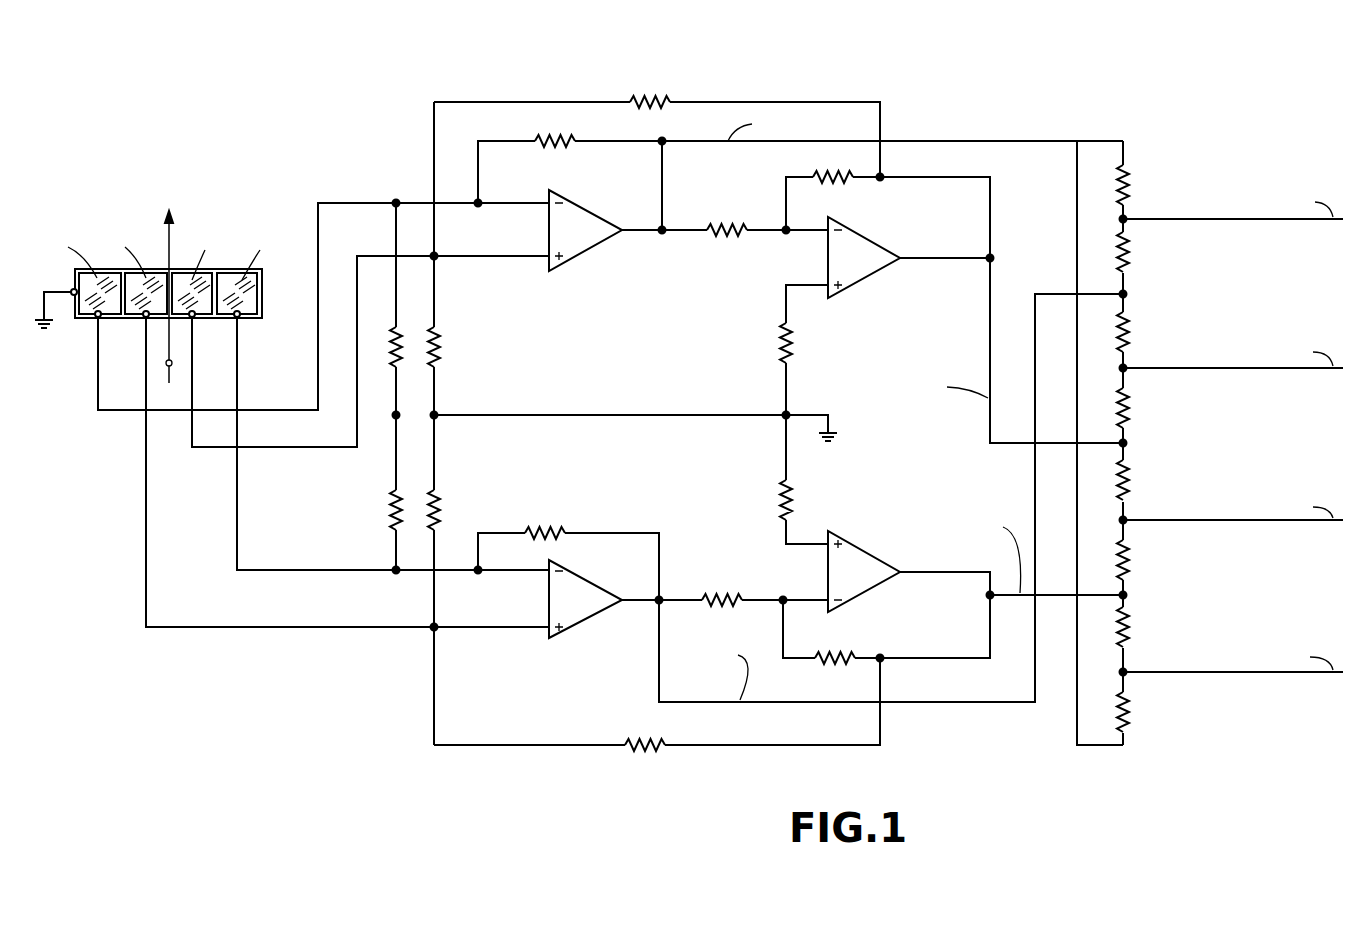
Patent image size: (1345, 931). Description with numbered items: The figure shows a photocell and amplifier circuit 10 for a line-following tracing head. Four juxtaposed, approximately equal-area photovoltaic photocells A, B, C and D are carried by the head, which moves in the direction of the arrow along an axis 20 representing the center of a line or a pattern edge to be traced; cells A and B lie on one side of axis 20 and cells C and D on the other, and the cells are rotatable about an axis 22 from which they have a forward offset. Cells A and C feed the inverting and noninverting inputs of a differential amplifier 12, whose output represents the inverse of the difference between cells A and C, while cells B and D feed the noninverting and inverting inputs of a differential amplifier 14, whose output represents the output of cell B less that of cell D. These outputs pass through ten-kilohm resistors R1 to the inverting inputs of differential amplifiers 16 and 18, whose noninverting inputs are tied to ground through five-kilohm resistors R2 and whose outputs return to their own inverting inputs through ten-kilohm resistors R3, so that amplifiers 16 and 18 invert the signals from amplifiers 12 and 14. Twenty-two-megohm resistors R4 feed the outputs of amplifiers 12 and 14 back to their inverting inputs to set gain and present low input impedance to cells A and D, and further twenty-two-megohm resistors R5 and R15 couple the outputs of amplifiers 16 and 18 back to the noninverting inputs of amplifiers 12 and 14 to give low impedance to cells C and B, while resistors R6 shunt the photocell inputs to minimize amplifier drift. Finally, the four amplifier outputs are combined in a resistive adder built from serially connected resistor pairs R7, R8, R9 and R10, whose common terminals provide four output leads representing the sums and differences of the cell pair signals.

The circuit 10 is at (998, 72).
The differential amplifier 12 is at (561, 241).
The differential amplifier 14 is at (560, 611).
The differential amplifier 16 is at (838, 269).
The differential amplifier 18 is at (838, 583).
The axis 20 is at (167, 235).
The axis 22 is at (167, 309).
The resistor R1 is at (717, 220).
The resistor R2 is at (783, 332).
The resistor R3 is at (833, 172).
The resistor R4 is at (550, 138).
The resistor R5 is at (645, 752).
The resistor R6 is at (390, 355).
The resistor R7 is at (1130, 178).
The resistor R8 is at (1127, 322).
The resistor R9 is at (1127, 472).
The resistor R10 is at (1127, 623).
The coupling resistor R15 is at (653, 97).